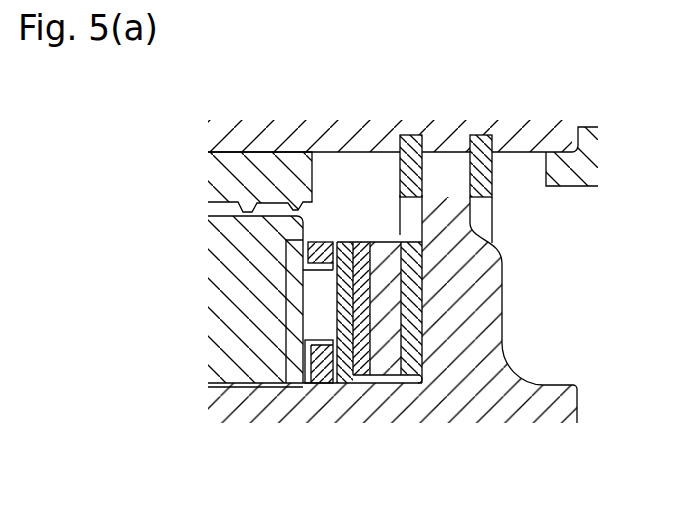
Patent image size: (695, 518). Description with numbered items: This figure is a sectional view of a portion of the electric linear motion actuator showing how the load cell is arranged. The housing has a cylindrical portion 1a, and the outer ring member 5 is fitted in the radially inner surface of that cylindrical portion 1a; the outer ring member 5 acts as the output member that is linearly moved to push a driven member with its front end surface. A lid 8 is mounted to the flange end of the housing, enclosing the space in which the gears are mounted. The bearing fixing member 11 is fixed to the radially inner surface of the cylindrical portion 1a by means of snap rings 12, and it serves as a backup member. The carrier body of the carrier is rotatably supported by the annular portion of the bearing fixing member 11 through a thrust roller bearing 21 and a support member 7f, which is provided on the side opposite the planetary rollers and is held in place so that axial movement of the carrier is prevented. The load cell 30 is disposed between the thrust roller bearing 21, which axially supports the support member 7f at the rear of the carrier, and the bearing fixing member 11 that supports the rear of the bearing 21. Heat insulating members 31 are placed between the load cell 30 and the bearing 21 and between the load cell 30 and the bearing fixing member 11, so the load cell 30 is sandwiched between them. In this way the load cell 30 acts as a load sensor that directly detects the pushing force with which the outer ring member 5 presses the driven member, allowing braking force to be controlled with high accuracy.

The cylindrical portion 1a is at (528, 142).
The outer ring member 5 is at (255, 180).
The support member 7f is at (233, 343).
The lid 8 is at (565, 177).
The bearing fixing member 11 is at (472, 328).
The snap rings 12 is at (480, 138).
The thrust roller bearing 21 is at (317, 302).
The load cell 30 is at (390, 283).
The heat insulating members 31 is at (412, 353).